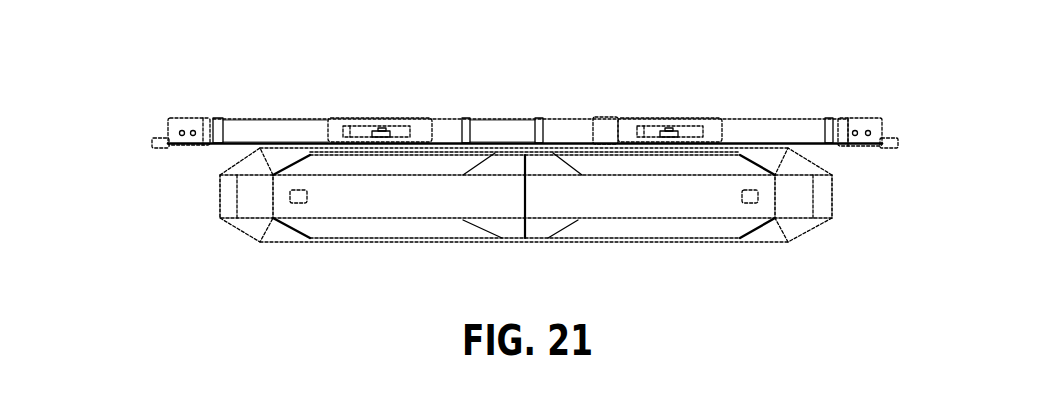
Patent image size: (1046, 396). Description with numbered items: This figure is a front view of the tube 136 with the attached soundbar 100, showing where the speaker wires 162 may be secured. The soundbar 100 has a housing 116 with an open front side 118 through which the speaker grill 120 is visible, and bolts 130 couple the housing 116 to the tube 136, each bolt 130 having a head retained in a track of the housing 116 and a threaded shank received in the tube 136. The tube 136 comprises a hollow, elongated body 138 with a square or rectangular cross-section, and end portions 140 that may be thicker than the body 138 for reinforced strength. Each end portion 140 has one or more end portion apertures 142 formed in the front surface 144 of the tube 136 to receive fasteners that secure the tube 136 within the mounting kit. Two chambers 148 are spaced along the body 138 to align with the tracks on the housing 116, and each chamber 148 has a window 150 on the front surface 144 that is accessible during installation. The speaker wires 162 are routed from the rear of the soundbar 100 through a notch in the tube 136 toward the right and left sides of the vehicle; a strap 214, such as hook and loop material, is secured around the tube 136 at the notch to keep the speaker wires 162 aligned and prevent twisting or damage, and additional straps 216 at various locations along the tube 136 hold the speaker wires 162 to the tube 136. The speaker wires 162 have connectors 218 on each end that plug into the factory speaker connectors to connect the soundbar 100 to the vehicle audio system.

The soundbar 100 is at (266, 262).
The housing 116 is at (707, 252).
The open front side 118 is at (247, 165).
The speaker grill 120 is at (618, 195).
The bolt 130 is at (380, 128).
The tube 136 is at (263, 106).
The body 138 is at (496, 123).
The end portion 140 is at (178, 117).
The end portion aperture 142 is at (179, 132).
The front surface 144 is at (302, 134).
The chamber 148 is at (343, 106).
The window 150 is at (409, 136).
The speaker wires 162 is at (808, 147).
The strap 214 is at (607, 106).
The additional straps 216 is at (218, 106).
The connector 218 is at (153, 148).